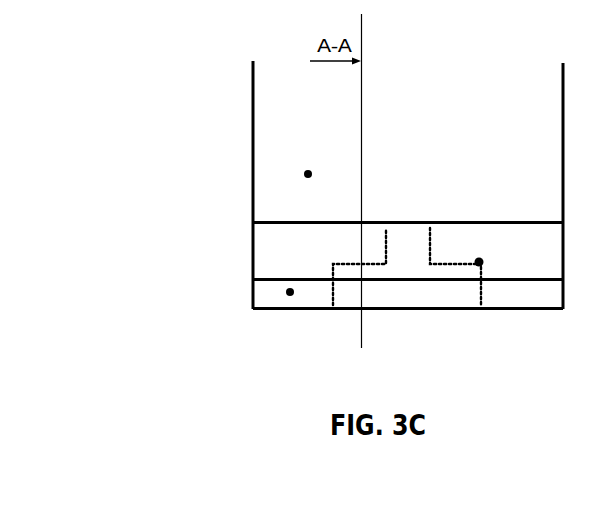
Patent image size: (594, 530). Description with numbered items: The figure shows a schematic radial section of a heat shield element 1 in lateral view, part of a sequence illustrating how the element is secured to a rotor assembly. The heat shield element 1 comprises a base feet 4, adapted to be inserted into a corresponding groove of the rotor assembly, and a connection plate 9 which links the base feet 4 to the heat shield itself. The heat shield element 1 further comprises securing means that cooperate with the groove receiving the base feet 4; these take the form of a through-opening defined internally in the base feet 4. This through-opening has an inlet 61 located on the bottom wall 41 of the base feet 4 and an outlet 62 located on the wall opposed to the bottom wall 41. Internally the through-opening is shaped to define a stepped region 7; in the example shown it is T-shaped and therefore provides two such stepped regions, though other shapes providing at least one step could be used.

The heat shield element 1 is at (190, 105).
The connection plate 9 is at (308, 174).
The outlet 62 is at (411, 206).
The base feet 4 is at (290, 292).
The stepped region 7 is at (479, 262).
The bottom wall 41 is at (307, 316).
The inlet 61 is at (422, 318).